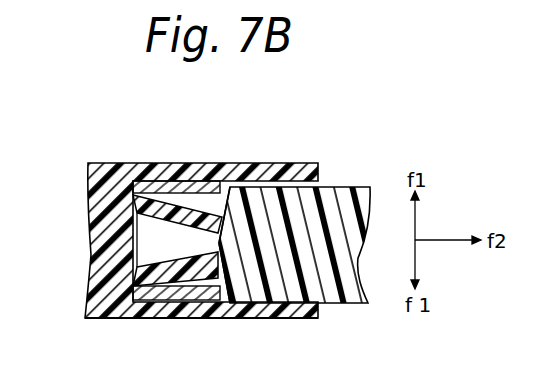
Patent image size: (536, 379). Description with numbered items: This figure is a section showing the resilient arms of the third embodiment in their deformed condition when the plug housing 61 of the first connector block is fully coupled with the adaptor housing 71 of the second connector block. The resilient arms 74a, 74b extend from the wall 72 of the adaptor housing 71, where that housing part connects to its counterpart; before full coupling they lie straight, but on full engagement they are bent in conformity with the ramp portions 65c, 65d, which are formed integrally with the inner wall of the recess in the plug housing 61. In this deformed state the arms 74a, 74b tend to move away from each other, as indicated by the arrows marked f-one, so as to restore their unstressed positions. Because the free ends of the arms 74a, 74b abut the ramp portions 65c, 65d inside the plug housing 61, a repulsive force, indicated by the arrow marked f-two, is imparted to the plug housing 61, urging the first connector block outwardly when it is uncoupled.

The plug housing 61 is at (358, 303).
The adaptor housing 71 is at (98, 318).
The wall 72 is at (121, 239).
The resilient arm 74a is at (166, 203).
The resilient arm 74b is at (186, 276).
The ramp portion 65c is at (226, 240).
The ramp portion 65d is at (232, 300).